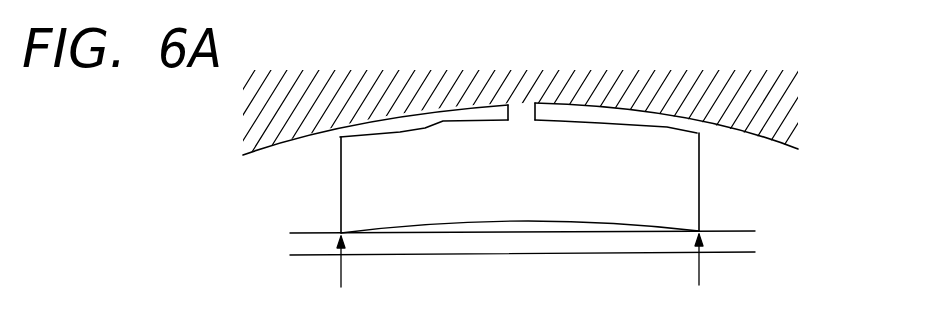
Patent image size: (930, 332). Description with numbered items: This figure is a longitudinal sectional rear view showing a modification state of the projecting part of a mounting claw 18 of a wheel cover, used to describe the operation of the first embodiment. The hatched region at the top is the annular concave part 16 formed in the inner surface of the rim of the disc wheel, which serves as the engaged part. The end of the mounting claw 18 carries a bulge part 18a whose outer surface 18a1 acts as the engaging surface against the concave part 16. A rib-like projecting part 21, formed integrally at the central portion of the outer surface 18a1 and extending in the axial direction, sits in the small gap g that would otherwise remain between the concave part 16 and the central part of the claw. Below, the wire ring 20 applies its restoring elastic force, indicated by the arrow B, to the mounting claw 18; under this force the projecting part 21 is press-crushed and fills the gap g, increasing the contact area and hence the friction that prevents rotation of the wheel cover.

The concave part 16 is at (297, 137).
The mounting claw 18 is at (699, 165).
The bulge part 18a is at (632, 126).
The outer surface 18a1 is at (442, 122).
The projecting part 21 is at (538, 108).
The gap g is at (568, 112).
The wire ring 20 is at (537, 243).
The arrow B is at (520, 262).